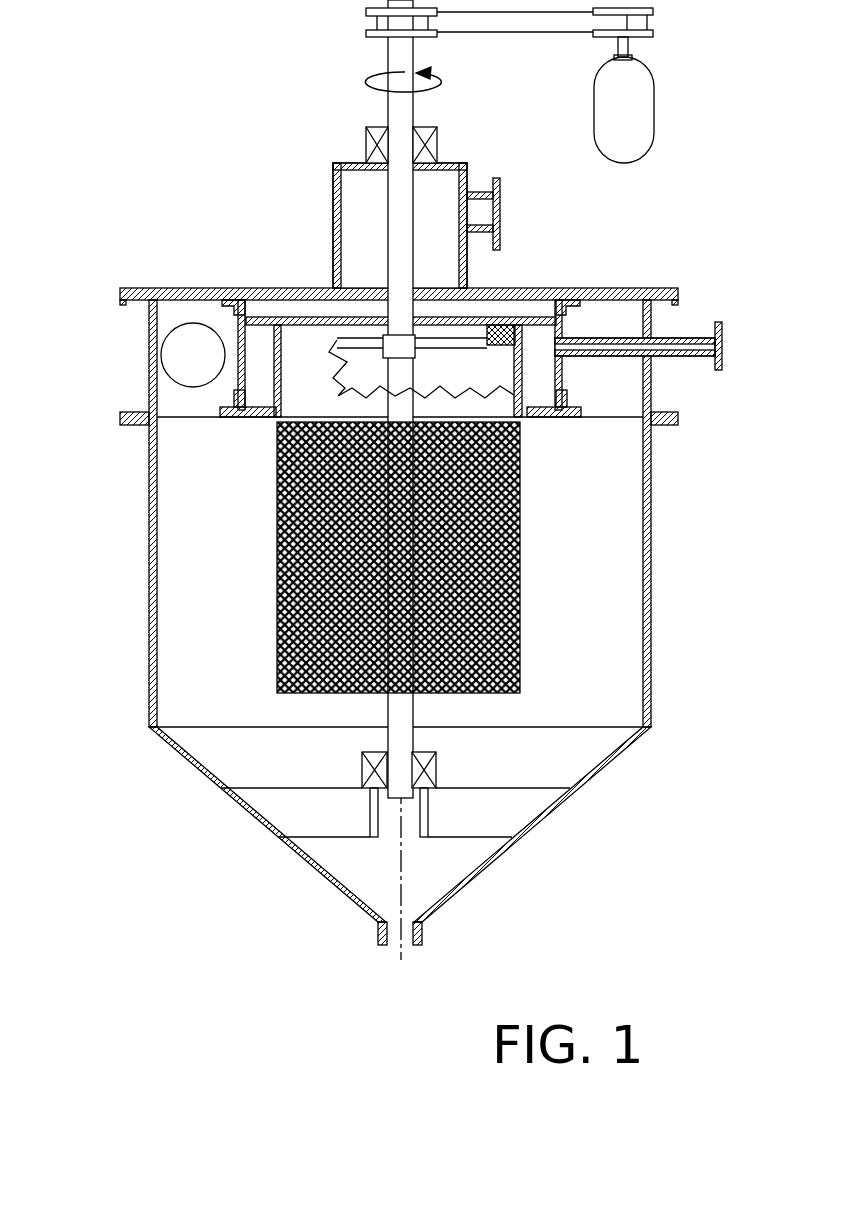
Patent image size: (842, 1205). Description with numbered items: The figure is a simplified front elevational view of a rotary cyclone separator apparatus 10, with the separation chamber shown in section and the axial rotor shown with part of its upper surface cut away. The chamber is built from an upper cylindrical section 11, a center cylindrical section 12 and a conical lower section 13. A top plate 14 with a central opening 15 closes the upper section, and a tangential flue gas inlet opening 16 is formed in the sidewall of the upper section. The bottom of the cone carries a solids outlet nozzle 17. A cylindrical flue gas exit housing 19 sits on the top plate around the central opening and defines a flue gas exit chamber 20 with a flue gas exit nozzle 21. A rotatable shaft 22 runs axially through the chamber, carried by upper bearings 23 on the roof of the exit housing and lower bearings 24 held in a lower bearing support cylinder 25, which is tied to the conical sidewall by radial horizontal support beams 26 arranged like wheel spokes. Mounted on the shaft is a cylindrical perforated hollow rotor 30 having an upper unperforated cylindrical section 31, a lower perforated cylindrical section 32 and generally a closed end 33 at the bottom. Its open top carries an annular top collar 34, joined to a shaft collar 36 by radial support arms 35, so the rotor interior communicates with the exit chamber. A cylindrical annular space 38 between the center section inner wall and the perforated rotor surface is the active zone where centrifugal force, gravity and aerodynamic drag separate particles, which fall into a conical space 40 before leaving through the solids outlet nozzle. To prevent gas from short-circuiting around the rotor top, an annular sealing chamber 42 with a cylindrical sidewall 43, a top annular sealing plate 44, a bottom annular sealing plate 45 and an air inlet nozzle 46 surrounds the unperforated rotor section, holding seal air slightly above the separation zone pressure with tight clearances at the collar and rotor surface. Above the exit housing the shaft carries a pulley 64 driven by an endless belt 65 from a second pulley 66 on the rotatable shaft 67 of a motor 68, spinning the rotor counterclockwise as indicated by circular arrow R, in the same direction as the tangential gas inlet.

The rotary cyclone separator apparatus 10 is at (170, 156).
The upper cylindrical section 11 is at (149, 336).
The center cylindrical section 12 is at (149, 522).
The conical lower section 13 is at (200, 777).
The top plate 14 is at (297, 288).
The central opening 15 is at (365, 290).
The tangential flue gas inlet opening 16 is at (183, 367).
The solids outlet nozzle 17 is at (378, 934).
The cylindrical flue gas exit housing 19 is at (333, 205).
The flue gas exit chamber 20 is at (354, 228).
The flue gas exit nozzle 21 is at (485, 192).
The rotatable shaft 22 is at (413, 197).
The upper bearings 23 is at (366, 143).
The lower bearings 24 is at (360, 770).
The lower bearing support cylinder 25 is at (370, 813).
The horizontal support beams 26 is at (277, 815).
The cylindrical perforated hollow rotor 30 is at (305, 640).
The upper unperforated cylindrical section 31 is at (308, 417).
The lower perforated cylindrical section 32 is at (300, 598).
The closed end 33 is at (300, 693).
The annular top collar 34 is at (485, 298).
The radial support arms 35 is at (383, 338).
The shaft collar 36 is at (383, 357).
The cylindrical annular space 38 is at (191, 568).
The conical space 40 is at (223, 770).
The annular sealing chamber 42 is at (222, 393).
The cylindrical sidewall 43 is at (183, 290).
The top annular sealing plate 44 is at (257, 288).
The bottom annular sealing plate 45 is at (255, 420).
The air inlet nozzle 46 is at (695, 330).
The pulley 64 is at (377, 38).
The endless belt 65 is at (473, 22).
The second pulley 66 is at (600, 38).
The rotatable shaft of motor 67 is at (630, 48).
The motor 68 is at (654, 117).
The circular arrow R is at (380, 88).